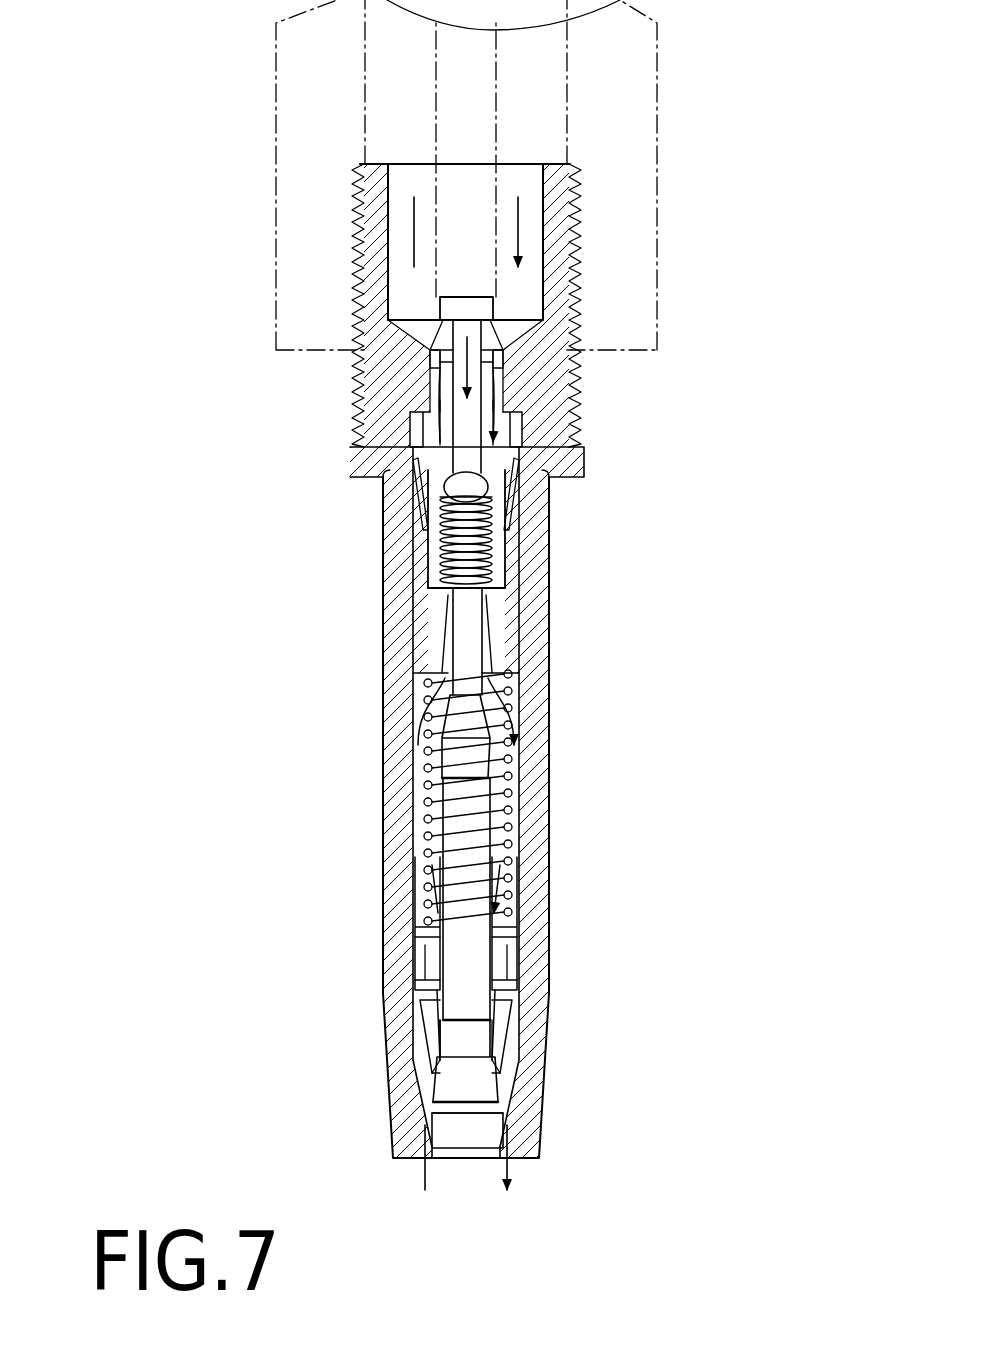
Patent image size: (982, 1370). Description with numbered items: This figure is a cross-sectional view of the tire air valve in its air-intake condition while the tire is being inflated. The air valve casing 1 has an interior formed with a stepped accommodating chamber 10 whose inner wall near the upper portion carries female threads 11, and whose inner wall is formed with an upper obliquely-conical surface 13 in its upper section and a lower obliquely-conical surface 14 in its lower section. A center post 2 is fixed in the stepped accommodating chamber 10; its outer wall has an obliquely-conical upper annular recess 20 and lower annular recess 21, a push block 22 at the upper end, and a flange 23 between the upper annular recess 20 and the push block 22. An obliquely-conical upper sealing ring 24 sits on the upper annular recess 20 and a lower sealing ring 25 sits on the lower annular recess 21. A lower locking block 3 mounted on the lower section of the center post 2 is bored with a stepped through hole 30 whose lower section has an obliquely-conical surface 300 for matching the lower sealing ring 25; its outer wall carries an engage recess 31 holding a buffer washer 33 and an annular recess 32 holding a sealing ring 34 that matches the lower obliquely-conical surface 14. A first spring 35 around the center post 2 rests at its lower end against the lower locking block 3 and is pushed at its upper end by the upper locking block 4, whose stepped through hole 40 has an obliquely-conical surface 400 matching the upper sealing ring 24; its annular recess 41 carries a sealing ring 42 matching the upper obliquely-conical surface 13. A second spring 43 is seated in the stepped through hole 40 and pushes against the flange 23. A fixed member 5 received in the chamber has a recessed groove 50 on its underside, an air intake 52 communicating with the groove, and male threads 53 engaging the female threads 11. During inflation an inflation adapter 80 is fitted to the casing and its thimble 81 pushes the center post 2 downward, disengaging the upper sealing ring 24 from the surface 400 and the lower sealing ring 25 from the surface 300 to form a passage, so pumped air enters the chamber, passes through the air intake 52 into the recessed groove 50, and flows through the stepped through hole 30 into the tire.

The air valve casing 1 is at (385, 707).
The stepped accommodating chamber 10 is at (420, 790).
The female threads 11 is at (540, 432).
The upper obliquely-conical surface 13 is at (415, 505).
The lower obliquely-conical surface 14 is at (432, 1052).
The center post 2 is at (442, 462).
The upper annular recess 20 is at (472, 750).
The lower annular recess 21 is at (472, 1085).
The push block 22 is at (485, 318).
The flange 23 is at (470, 487).
The upper sealing ring 24 is at (485, 772).
The lower sealing ring 25 is at (505, 1068).
The lower locking block 3 is at (417, 1007).
The stepped through hole 30 is at (430, 953).
The obliquely-conical surface 300 is at (420, 1033).
The engage recess 31 is at (477, 930).
The annular recess 32 is at (513, 1038).
The buffer washer 33 is at (517, 943).
The sealing ring 34 is at (517, 1010).
The first spring 35 is at (517, 820).
The upper locking block 4 is at (425, 627).
The stepped through hole 40 is at (445, 568).
The obliquely-conical surface 400 is at (495, 655).
The annular recess 41 is at (505, 568).
The sealing ring 42 is at (507, 542).
The second spring 43 is at (445, 530).
The fixed member 5 is at (512, 341).
The recessed groove 50 is at (432, 395).
The air intake 52 is at (440, 365).
The male threads 53 is at (523, 466).
The inflation adapter 80 is at (628, 157).
The thimble 81 is at (475, 92).